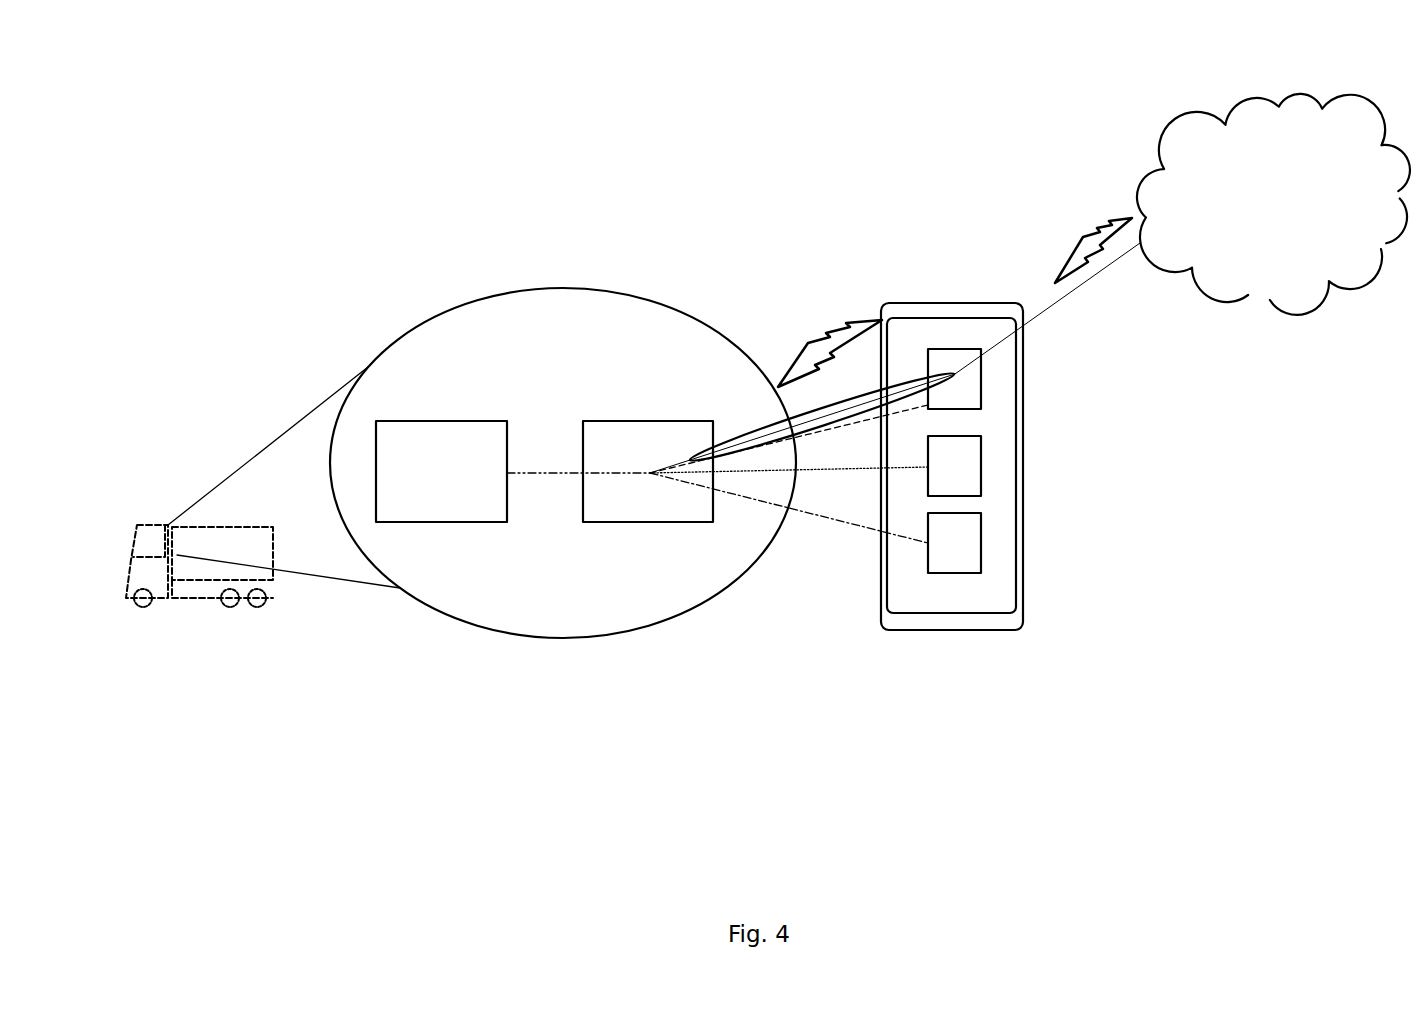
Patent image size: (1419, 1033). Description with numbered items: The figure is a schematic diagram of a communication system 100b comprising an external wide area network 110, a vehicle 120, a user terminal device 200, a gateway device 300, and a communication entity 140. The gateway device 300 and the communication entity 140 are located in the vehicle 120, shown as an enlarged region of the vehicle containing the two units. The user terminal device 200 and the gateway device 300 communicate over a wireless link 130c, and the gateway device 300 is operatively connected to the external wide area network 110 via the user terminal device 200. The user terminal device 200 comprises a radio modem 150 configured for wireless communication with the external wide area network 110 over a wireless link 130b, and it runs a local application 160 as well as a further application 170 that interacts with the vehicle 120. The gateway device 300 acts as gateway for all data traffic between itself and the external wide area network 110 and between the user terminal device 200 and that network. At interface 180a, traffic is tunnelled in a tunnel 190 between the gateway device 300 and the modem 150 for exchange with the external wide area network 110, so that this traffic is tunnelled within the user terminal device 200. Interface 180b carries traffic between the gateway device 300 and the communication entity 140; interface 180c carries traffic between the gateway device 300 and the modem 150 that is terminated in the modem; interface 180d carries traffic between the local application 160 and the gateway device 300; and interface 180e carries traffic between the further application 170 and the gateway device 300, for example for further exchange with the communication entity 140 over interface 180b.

The communication system 100b is at (230, 82).
The external wide area network 110 is at (1288, 317).
The vehicle 120 is at (179, 593).
The wireless link 130b is at (1090, 230).
The wireless link 130c is at (852, 327).
The communication entity 140 is at (448, 510).
The radio modem 150 is at (975, 376).
The local application 160 is at (975, 465).
The further application 170 is at (975, 552).
The interface 180a is at (758, 437).
The interface 180b is at (533, 476).
The interface 180c is at (793, 427).
The interface 180d is at (830, 467).
The interface 180e is at (862, 527).
The tunnel 190 is at (917, 372).
The user terminal device 200 is at (945, 622).
The gateway device 300 is at (688, 508).